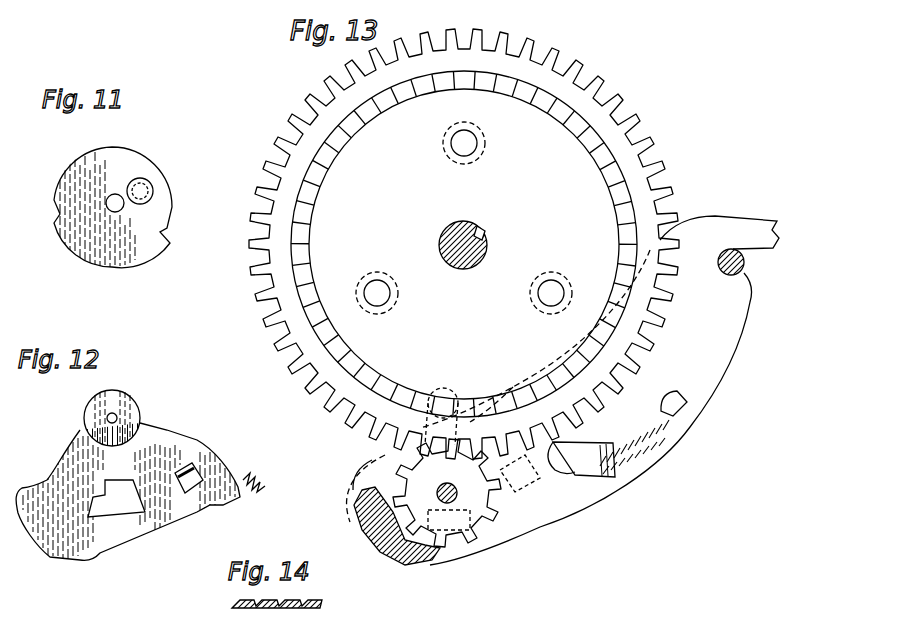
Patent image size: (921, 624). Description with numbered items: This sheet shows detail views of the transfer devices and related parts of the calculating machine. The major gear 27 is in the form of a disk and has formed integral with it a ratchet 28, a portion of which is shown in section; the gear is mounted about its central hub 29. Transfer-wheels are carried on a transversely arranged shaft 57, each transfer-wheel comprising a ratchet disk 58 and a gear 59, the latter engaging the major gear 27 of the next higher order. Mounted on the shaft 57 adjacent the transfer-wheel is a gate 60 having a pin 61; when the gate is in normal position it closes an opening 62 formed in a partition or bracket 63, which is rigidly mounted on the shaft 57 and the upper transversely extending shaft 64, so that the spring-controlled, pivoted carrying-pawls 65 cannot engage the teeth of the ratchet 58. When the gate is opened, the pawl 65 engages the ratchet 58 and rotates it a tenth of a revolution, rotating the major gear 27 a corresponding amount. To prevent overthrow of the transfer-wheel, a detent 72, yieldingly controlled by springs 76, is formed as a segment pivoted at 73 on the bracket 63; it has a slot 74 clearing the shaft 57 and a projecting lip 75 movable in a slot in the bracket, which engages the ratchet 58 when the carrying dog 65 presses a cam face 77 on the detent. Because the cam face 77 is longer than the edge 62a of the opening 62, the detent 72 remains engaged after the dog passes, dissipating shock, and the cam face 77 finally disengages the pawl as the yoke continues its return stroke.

In FIG. 13, the major gear 27 is at (620, 108).
In FIG. 14, the ratchet 28 is at (277, 596).
In FIG. 13, the ratchet 28 is at (521, 95).
In FIG. 13, the shaft hub 29 is at (462, 270).
In FIG. 13, the shaft 57 is at (498, 526).
In FIG. 13, the ratchet disk 58 is at (398, 470).
In FIG. 13, the gear 59 is at (462, 542).
In FIG. 11, the gate 60 is at (120, 152).
In FIG. 11, the pin 61 is at (150, 187).
In FIG. 13, the opening 62 is at (470, 546).
In FIG. 13, the face or edge 62a is at (420, 555).
In FIG. 13, the partition or bracket 63 is at (713, 396).
In FIG. 13, the upper transversely extending shaft 64 is at (745, 266).
In FIG. 13, the carrying-pawl 65 is at (455, 562).
In FIG. 12, the detent 72 is at (170, 432).
In FIG. 13, the detent 72 is at (352, 514).
In FIG. 12, the pivot 73 is at (114, 418).
In FIG. 13, the pivot 73 is at (450, 394).
In FIG. 12, the slot 74 is at (128, 512).
In FIG. 13, the slot 74 is at (449, 467).
In FIG. 12, the projecting lip 75 is at (195, 465).
In FIG. 13, the projecting lip 75 is at (557, 471).
In FIG. 12, the springs 76 is at (258, 494).
In FIG. 13, the springs 76 is at (642, 448).
In FIG. 12, the cam face 77 is at (100, 560).
In FIG. 13, the cam face 77 is at (442, 548).